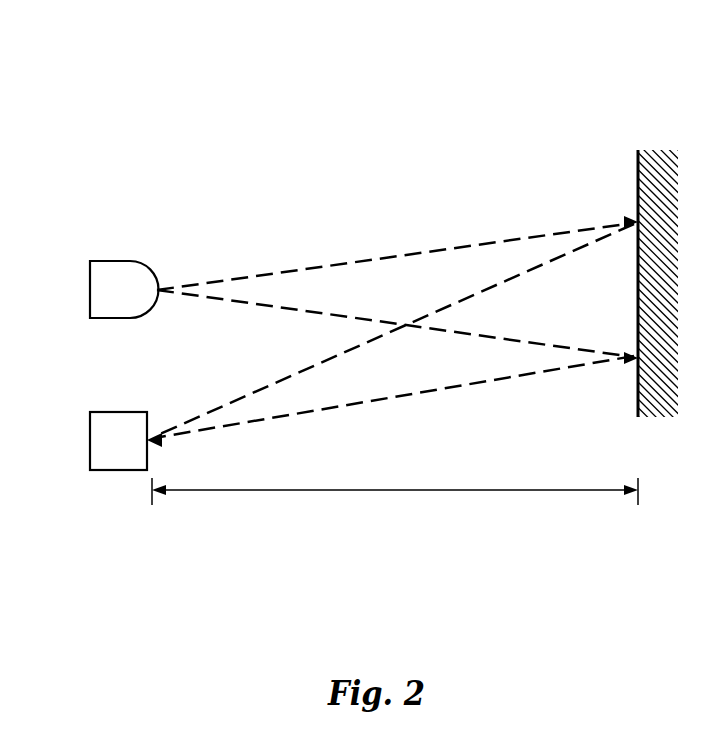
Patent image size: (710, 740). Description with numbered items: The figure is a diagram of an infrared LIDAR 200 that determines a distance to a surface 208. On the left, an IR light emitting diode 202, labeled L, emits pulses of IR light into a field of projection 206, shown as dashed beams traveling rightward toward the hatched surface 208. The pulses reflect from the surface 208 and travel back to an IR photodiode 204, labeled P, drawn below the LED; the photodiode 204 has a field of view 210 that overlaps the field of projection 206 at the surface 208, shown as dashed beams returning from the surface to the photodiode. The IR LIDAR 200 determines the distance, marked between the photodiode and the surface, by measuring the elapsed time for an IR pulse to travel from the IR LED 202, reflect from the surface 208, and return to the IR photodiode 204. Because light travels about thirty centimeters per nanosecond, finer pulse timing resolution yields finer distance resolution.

The infrared LIDAR 200 is at (374, 30).
The IR light emitting diode 202 is at (108, 261).
The IR photodiode 204 is at (118, 412).
The field of projection 206 is at (396, 222).
The surface 208 is at (638, 150).
The field of view 210 is at (253, 378).